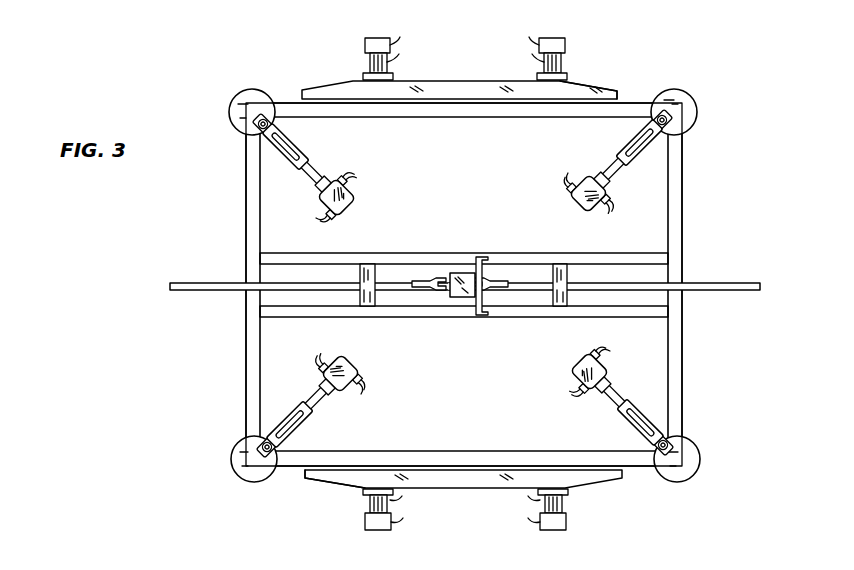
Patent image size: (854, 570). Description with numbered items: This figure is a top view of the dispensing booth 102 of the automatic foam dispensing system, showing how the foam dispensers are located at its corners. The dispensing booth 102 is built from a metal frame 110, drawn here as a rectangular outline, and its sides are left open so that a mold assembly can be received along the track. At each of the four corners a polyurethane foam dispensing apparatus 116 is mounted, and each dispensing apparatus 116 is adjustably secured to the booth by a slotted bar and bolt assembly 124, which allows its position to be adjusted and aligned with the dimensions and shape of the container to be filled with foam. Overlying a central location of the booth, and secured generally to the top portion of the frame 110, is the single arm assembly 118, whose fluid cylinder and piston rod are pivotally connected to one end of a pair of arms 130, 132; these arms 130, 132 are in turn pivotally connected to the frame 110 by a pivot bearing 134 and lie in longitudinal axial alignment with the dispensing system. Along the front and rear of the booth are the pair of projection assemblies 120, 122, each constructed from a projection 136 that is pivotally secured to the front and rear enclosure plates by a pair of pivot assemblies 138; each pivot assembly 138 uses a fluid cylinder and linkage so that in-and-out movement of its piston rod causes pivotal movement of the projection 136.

The dispensing booth 102 is at (688, 244).
The metal frame 110 is at (672, 185).
The polyurethane foam dispensing apparatus 116 is at (352, 193).
The arm assembly 118 is at (460, 275).
The projection assembly 120 is at (494, 483).
The projection assembly 122 is at (447, 93).
The slotted bar and bolt assembly 124 is at (298, 138).
The arm 130 is at (714, 282).
The arm 132 is at (204, 290).
The pivot bearing 134 is at (368, 268).
The projection 136 is at (587, 97).
The pivot assembly 138 is at (366, 60).